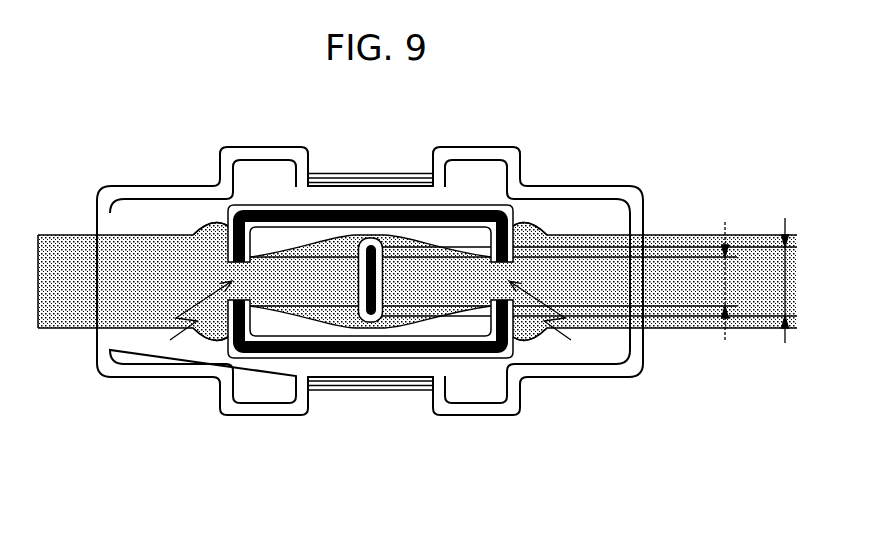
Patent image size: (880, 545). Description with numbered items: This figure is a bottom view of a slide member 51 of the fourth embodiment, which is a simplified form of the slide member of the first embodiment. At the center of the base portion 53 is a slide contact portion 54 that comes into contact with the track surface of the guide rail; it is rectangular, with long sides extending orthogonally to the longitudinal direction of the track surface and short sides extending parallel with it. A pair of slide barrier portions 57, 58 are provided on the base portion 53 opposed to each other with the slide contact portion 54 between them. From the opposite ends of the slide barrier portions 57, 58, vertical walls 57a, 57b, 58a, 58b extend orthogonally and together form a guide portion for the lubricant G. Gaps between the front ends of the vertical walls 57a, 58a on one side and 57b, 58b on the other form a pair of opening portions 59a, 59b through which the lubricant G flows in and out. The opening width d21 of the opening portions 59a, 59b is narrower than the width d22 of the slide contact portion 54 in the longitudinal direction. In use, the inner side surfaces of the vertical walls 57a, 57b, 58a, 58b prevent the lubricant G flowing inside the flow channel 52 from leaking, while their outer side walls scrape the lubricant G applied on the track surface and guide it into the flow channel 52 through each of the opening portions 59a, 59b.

The slide member 51 is at (620, 141).
The flow channel 52 is at (275, 328).
The base portion 53 is at (633, 362).
The slide contact portion 54 is at (383, 270).
The slide barrier portion 57 is at (417, 206).
The vertical wall 57a is at (214, 225).
The vertical wall 57b is at (527, 228).
The slide barrier portion 58 is at (366, 390).
The vertical wall 58a is at (213, 338).
The vertical wall 58b is at (529, 338).
The opening portion 59a is at (177, 322).
The opening portion 59b is at (569, 322).
The lubricant G is at (76, 331).
The opening width d21 is at (703, 281).
The width in longitudinal direction d22 is at (762, 280).